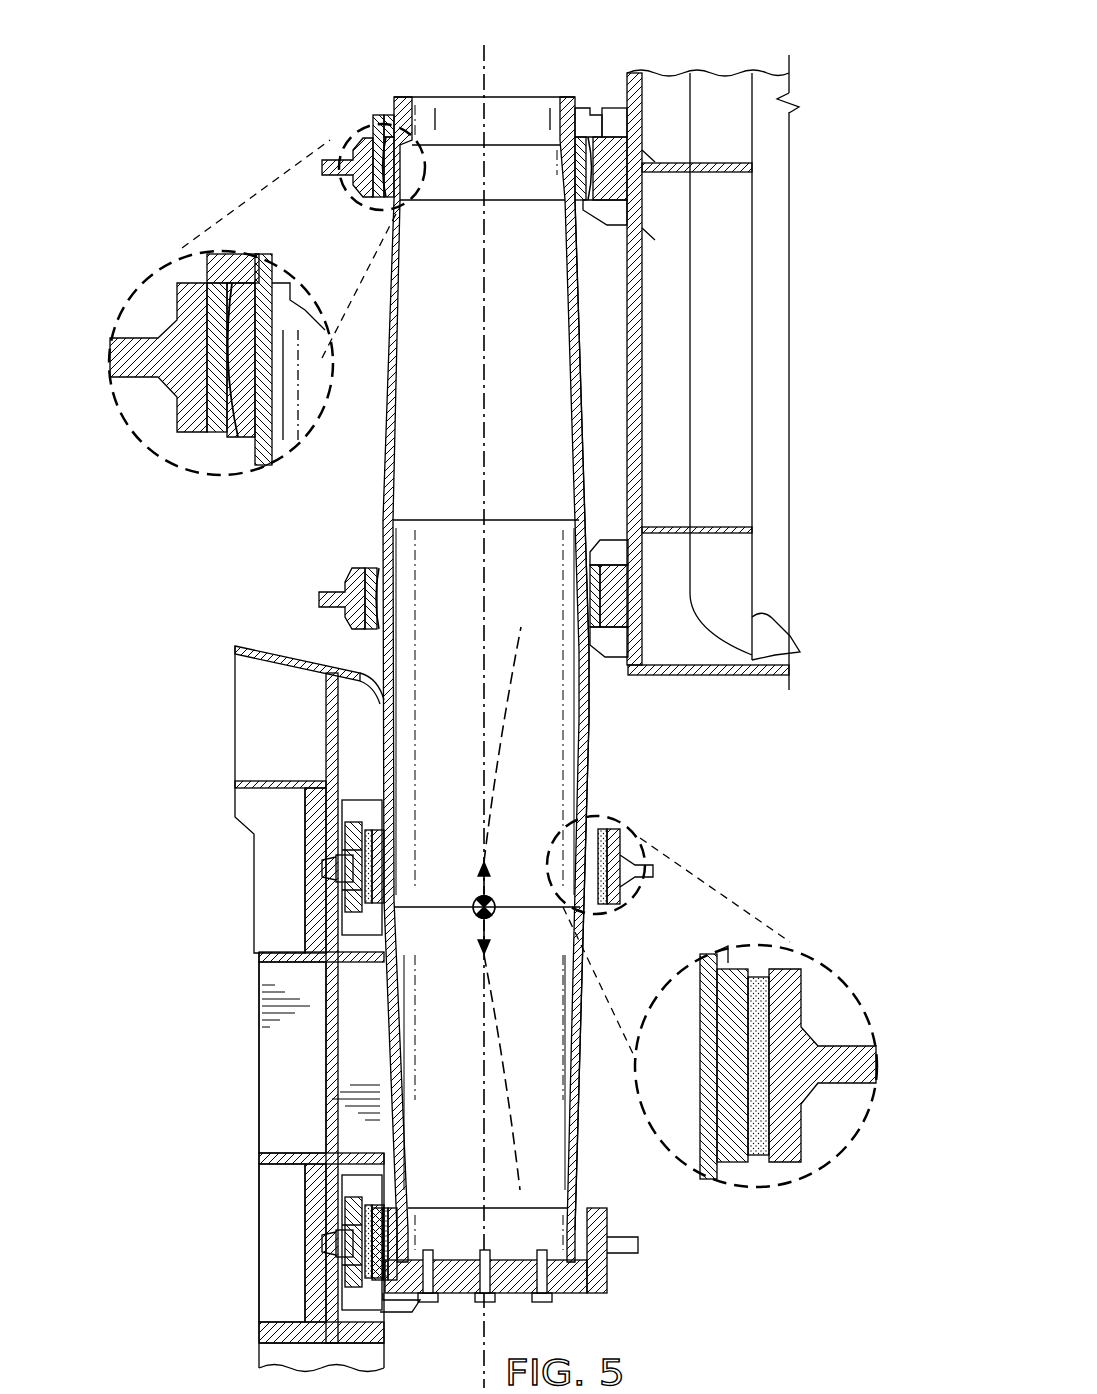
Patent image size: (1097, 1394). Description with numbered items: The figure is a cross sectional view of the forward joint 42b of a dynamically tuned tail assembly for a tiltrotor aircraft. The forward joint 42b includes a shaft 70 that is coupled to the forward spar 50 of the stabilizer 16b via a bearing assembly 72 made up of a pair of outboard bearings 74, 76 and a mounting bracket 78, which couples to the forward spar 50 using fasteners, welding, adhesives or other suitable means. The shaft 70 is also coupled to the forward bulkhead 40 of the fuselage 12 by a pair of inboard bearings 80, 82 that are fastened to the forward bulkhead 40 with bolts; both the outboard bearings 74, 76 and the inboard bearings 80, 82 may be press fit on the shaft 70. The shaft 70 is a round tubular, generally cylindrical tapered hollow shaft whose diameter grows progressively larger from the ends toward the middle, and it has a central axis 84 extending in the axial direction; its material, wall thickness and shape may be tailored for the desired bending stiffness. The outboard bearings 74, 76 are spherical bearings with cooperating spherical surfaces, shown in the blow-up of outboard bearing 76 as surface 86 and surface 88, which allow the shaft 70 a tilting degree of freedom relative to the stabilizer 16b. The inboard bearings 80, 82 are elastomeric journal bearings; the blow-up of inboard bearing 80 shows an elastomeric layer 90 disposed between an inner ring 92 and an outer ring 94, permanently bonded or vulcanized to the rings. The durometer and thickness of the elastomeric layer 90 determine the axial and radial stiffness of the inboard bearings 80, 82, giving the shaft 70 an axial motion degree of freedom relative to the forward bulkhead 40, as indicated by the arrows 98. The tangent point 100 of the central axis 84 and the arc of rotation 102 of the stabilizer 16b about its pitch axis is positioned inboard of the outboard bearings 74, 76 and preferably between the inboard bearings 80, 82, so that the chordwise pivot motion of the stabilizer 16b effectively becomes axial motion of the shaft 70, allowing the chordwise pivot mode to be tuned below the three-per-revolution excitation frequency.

The fuselage 12 is at (270, 1344).
The stabilizer 16b is at (765, 74).
The forward bulkhead 40 is at (262, 1300).
The forward joint 42b is at (598, 705).
The forward spar 50 is at (779, 208).
The shaft 70 is at (590, 748).
The bearing assembly 72 is at (631, 66).
The outboard bearing 74 is at (330, 590).
The outboard bearing 76 is at (342, 142).
The mounting bracket 78 is at (668, 74).
The inboard bearing 80 is at (630, 836).
The inboard bearing 82 is at (640, 1249).
The central axis 84 is at (484, 74).
The spherical surface 86 is at (232, 436).
The spherical surface 88 is at (252, 406).
The elastomeric layer 90 is at (758, 1158).
The inner ring 92 is at (735, 1164).
The outer ring 94 is at (792, 1150).
The arrows 98 is at (480, 890).
The tangent point 100 is at (472, 920).
The arc of rotation 102 is at (530, 1155).